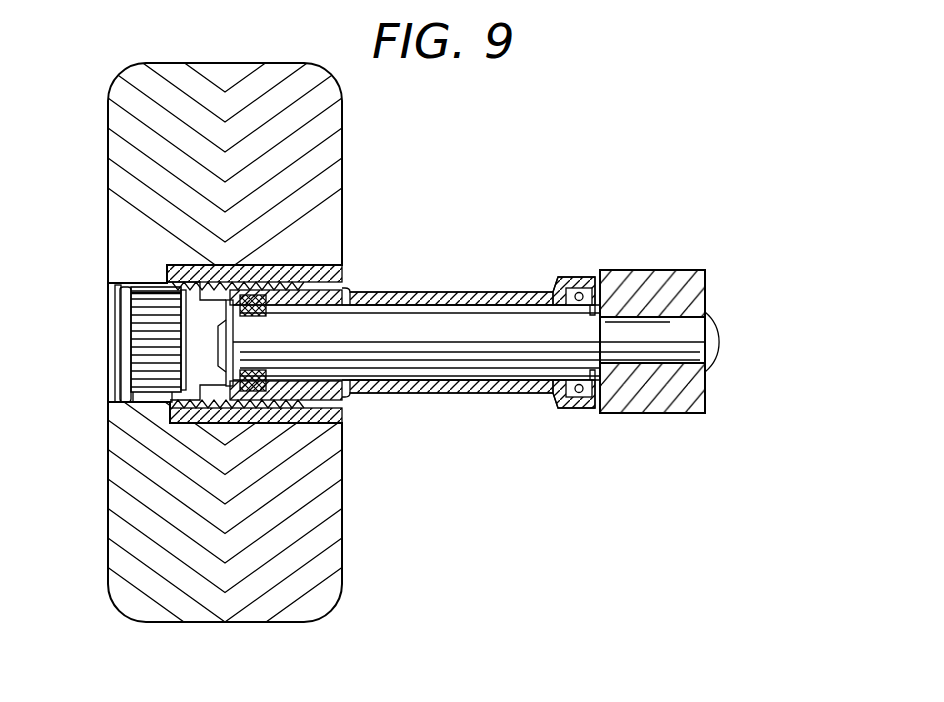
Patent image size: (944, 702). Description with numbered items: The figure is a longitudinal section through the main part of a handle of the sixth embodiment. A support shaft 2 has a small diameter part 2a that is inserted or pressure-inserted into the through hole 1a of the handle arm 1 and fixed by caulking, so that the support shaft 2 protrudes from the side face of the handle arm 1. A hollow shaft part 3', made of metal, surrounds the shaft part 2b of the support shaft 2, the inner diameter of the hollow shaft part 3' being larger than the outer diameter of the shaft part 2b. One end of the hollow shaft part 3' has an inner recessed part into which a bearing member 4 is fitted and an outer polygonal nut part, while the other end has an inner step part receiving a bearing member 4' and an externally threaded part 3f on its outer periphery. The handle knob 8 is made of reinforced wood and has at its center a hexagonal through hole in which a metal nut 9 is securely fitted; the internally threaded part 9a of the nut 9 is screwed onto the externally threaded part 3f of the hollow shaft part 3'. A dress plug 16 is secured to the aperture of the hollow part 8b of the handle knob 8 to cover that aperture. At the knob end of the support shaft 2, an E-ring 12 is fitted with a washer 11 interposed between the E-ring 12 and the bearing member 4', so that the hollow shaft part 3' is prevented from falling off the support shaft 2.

The handle arm 1 is at (681, 256).
The through hole 1a is at (690, 355).
The support shaft 2 is at (414, 293).
The small diameter part 2a is at (690, 343).
The shaft part 2b is at (384, 332).
The hollow shaft part 3' is at (454, 308).
The externally threaded part 3f is at (303, 422).
The bearing member 4 is at (574, 378).
The bearing member 4' is at (313, 411).
The handle knob 8 is at (357, 106).
The hollow part 8b is at (143, 388).
The nut 9 is at (152, 259).
The internally threaded part 9a is at (165, 279).
The washer 11 is at (212, 378).
The E-ring 12 is at (128, 304).
The dress plug 16 is at (165, 345).